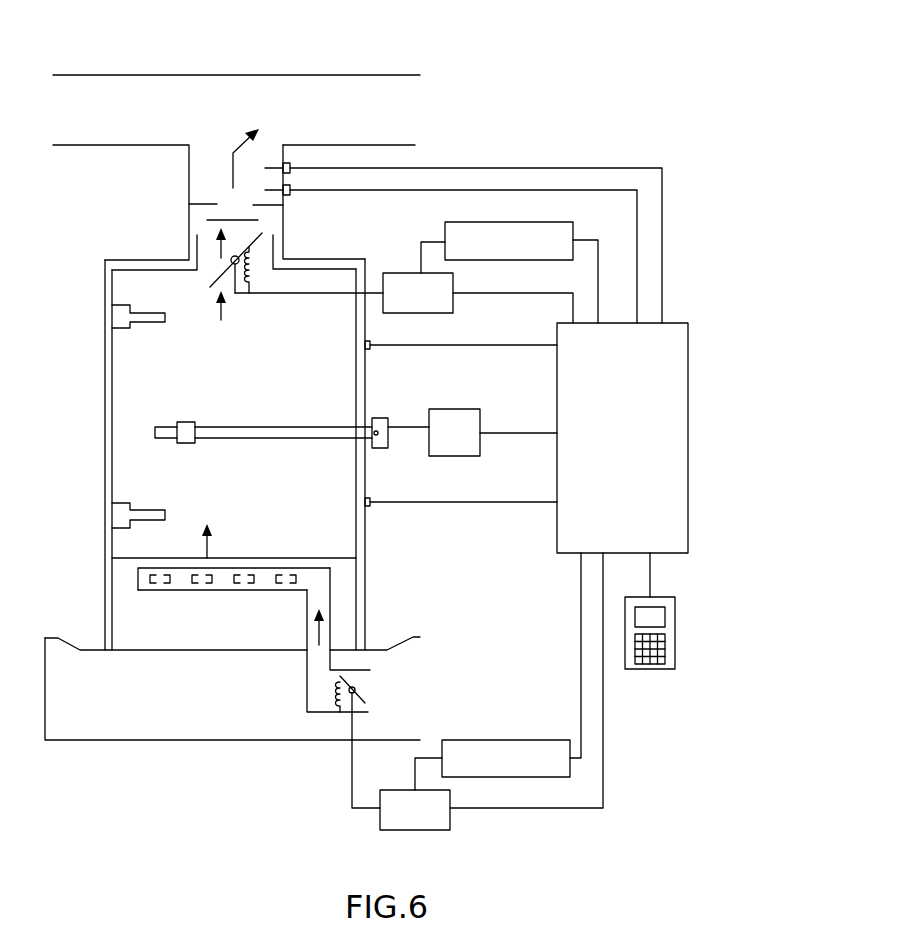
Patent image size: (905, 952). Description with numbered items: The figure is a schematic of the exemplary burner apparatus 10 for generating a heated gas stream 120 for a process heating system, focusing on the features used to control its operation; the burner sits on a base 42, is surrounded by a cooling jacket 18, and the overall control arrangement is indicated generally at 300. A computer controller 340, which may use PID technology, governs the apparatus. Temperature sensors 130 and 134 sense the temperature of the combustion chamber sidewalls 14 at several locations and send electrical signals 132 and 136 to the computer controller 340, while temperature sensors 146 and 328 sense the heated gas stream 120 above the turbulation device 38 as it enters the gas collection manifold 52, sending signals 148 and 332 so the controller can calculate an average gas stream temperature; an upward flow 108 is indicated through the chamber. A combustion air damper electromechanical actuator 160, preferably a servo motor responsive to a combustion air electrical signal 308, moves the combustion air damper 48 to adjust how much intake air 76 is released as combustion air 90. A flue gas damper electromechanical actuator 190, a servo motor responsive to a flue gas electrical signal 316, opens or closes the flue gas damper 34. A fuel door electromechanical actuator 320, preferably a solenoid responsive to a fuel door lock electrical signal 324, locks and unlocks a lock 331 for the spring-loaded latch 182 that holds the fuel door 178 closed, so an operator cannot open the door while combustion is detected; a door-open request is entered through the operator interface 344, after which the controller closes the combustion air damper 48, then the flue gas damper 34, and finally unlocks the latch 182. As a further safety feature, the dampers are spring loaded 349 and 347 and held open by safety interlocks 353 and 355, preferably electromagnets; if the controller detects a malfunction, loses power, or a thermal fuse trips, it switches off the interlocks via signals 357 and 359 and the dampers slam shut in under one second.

The burner apparatus 10 is at (112, 260).
The combustion chamber sidewalls 14 is at (112, 432).
The cooling jacket 18 is at (104, 388).
The flue gas damper 34 is at (211, 286).
The turbulation device 38 is at (206, 204).
The base 42 is at (192, 740).
The combustion air damper 48 is at (365, 703).
The gas collection manifold 52 is at (261, 75).
The intake air 76 is at (367, 678).
The combustion air 90 is at (208, 548).
The air flow arrow 108 is at (220, 328).
The heated gas stream 120 is at (236, 143).
The temperature sensor 130 is at (370, 505).
The electrical signal 132 is at (478, 504).
The temperature sensor 134 is at (372, 343).
The electrical signal 136 is at (478, 345).
The temperature sensor 146 is at (290, 194).
The electrical signal 148 is at (504, 189).
The combustion air damper electromechanical actuator 160 is at (378, 823).
The fuel door 178 is at (150, 470).
The latch 182 is at (305, 427).
The flue gas damper electromechanical actuator 190 is at (418, 273).
The control system 300 is at (492, 57).
The combustion air electrical signal 308 is at (538, 808).
The flue gas electrical signal 316 is at (500, 293).
The fuel door electromechanical actuator 320 is at (450, 409).
The fuel door lock electrical signal 324 is at (505, 433).
The temperature sensor 328 is at (288, 162).
The lock 331 is at (406, 425).
The electrical signal 332 is at (459, 167).
The computer controller 340 is at (689, 448).
The operator interface 344 is at (655, 669).
The spring loading 347 is at (252, 282).
The spring loading 349 is at (336, 697).
The safety interlock 353 is at (500, 740).
The safety interlock 355 is at (486, 222).
The signal 357 is at (581, 628).
The signal 359 is at (588, 240).